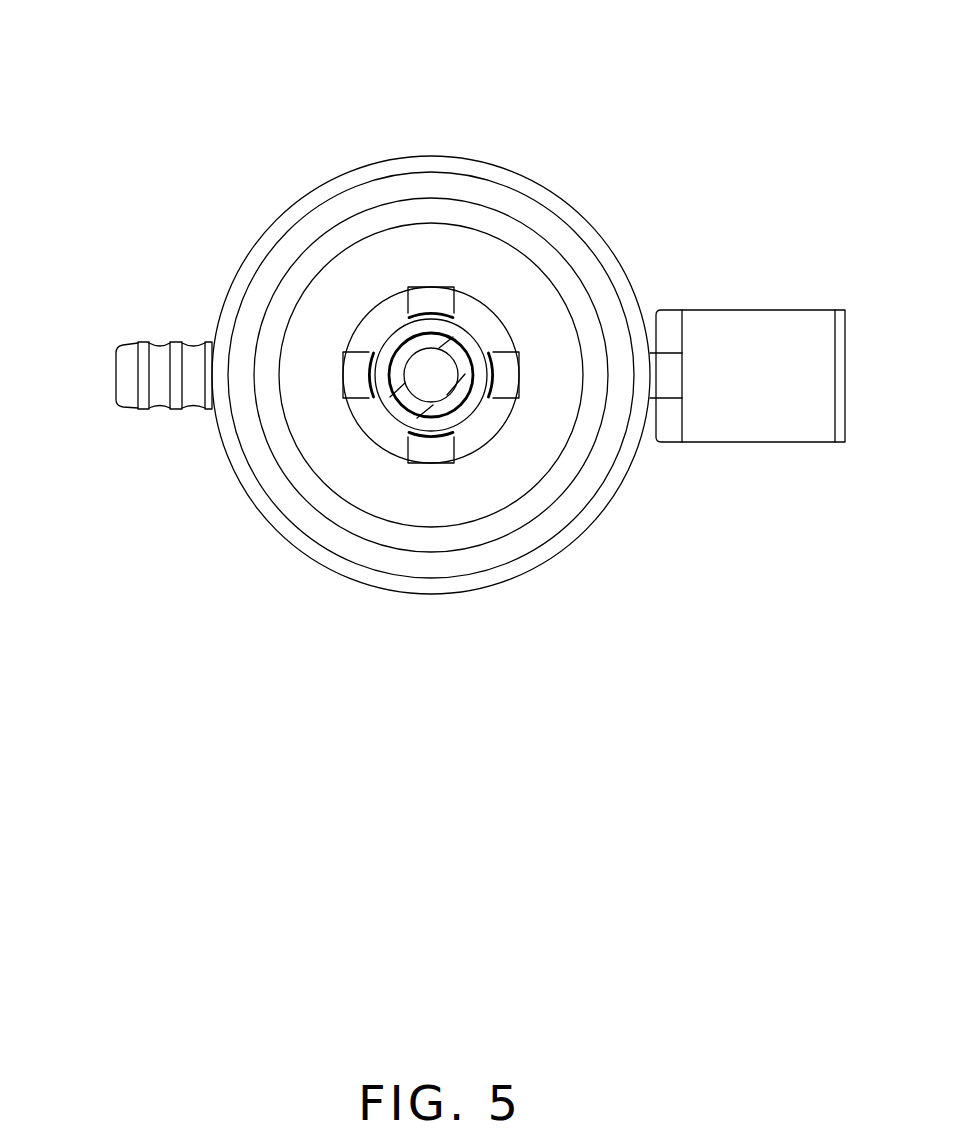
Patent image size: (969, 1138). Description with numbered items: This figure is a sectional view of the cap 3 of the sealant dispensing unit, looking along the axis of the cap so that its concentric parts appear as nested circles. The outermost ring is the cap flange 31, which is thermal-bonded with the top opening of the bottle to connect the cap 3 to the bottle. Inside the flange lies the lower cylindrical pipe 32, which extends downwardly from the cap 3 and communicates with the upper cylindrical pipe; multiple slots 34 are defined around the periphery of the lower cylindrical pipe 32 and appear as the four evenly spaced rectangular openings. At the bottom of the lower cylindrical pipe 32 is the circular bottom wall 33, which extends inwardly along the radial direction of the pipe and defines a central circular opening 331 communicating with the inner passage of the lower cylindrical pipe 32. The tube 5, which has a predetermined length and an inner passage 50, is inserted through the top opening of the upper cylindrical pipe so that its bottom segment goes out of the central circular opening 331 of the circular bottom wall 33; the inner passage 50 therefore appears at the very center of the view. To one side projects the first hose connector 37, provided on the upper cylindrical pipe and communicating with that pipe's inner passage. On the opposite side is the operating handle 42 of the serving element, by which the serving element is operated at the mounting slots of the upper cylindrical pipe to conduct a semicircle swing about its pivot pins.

The cap 3 is at (463, 157).
The cap flange 31 is at (302, 522).
The lower cylindrical pipe 32 is at (483, 325).
The circular bottom wall 33 is at (453, 313).
The central circular opening 331 is at (475, 350).
The slots 34 is at (357, 375).
The first hose connector 37 is at (128, 361).
The operating handle 42 is at (770, 350).
The tube 5 is at (407, 402).
The inner passage 50 is at (431, 375).